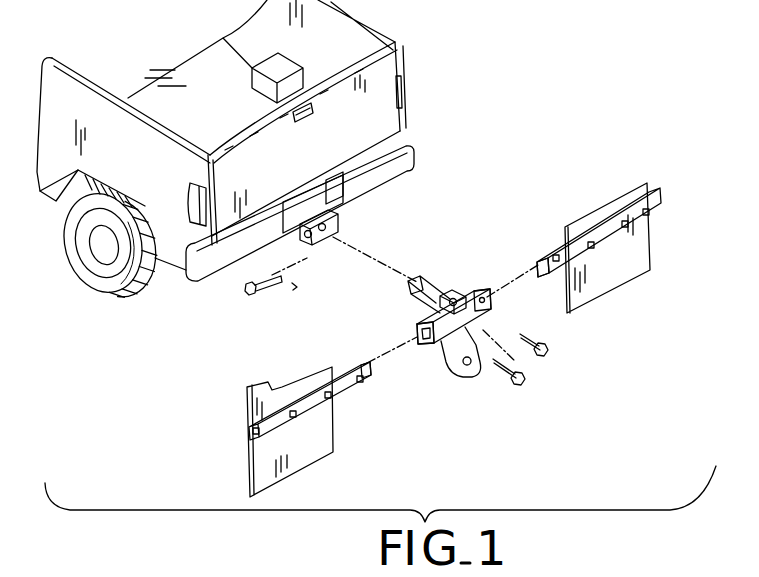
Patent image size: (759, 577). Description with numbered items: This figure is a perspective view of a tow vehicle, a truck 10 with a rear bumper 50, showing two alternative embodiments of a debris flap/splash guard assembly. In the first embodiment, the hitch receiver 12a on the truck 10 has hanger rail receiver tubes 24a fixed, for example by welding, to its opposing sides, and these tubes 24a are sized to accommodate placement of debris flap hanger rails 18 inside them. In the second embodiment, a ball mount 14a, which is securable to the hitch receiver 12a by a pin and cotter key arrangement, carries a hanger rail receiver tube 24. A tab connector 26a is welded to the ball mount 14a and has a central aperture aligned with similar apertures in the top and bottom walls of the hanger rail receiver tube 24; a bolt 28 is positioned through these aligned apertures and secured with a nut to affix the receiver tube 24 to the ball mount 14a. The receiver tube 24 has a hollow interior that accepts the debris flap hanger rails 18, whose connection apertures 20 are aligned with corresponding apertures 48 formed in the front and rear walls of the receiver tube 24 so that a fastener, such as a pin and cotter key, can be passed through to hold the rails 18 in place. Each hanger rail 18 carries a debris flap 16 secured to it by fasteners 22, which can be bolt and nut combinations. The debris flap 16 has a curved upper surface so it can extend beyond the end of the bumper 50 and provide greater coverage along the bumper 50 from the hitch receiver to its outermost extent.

The truck 10 is at (419, 35).
The bumper 50 is at (410, 147).
The hitch receiver 12a is at (329, 252).
The hanger rail receiver tubes 24a is at (330, 217).
The ball mount 14a is at (438, 264).
The apertures 48 is at (425, 325).
The tab connector 26a is at (461, 301).
The bolt 28 is at (455, 295).
The hanger rail receiver tube 24 is at (443, 340).
The debris flap hanger rails 18 is at (540, 262).
The connection apertures 20 is at (550, 273).
The debris flap 16 is at (643, 243).
The fasteners 22 is at (583, 227).